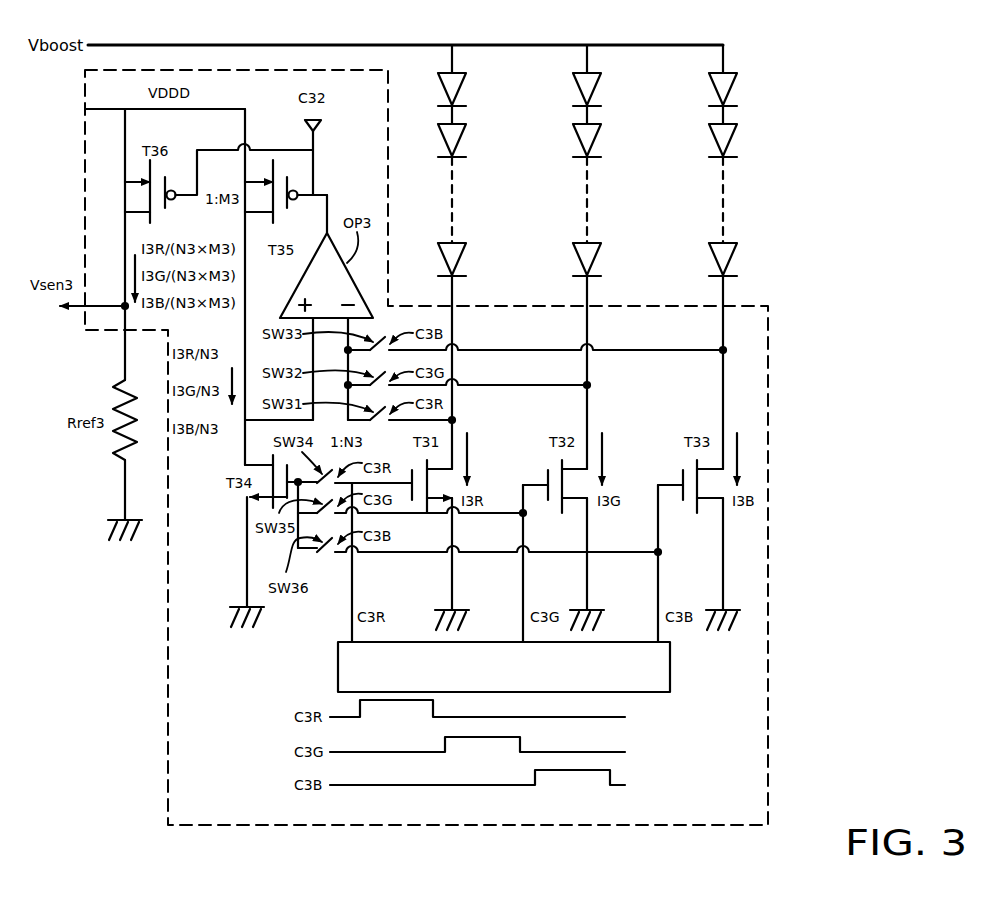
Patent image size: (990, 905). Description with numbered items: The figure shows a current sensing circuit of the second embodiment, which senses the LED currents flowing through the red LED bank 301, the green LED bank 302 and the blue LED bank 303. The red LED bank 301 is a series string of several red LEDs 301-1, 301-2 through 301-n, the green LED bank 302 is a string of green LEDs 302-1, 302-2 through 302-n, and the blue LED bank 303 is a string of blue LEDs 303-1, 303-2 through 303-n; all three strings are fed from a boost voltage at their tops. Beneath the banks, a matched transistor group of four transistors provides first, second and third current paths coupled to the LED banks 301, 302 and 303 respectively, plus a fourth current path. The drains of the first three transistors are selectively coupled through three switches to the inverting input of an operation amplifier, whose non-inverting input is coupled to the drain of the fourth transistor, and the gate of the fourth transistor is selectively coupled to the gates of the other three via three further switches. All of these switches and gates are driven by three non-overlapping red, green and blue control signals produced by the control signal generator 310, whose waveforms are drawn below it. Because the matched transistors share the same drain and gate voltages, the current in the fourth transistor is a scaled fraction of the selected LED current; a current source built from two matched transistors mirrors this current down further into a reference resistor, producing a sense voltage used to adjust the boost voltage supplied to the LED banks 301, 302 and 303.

The R LED bank 301 is at (503, 164).
The R LED 301-1 is at (477, 89).
The R LED 301-2 is at (477, 140).
The R LED 301-n is at (477, 259).
The G LED bank 302 is at (639, 164).
The G LED 302-1 is at (612, 89).
The G LED 302-2 is at (612, 140).
The G LED 302-n is at (612, 259).
The B LED bank 303 is at (774, 164).
The B LED 303-1 is at (748, 89).
The B LED 303-2 is at (748, 140).
The B LED 303-n is at (748, 259).
The control signal generator 310 is at (670, 667).